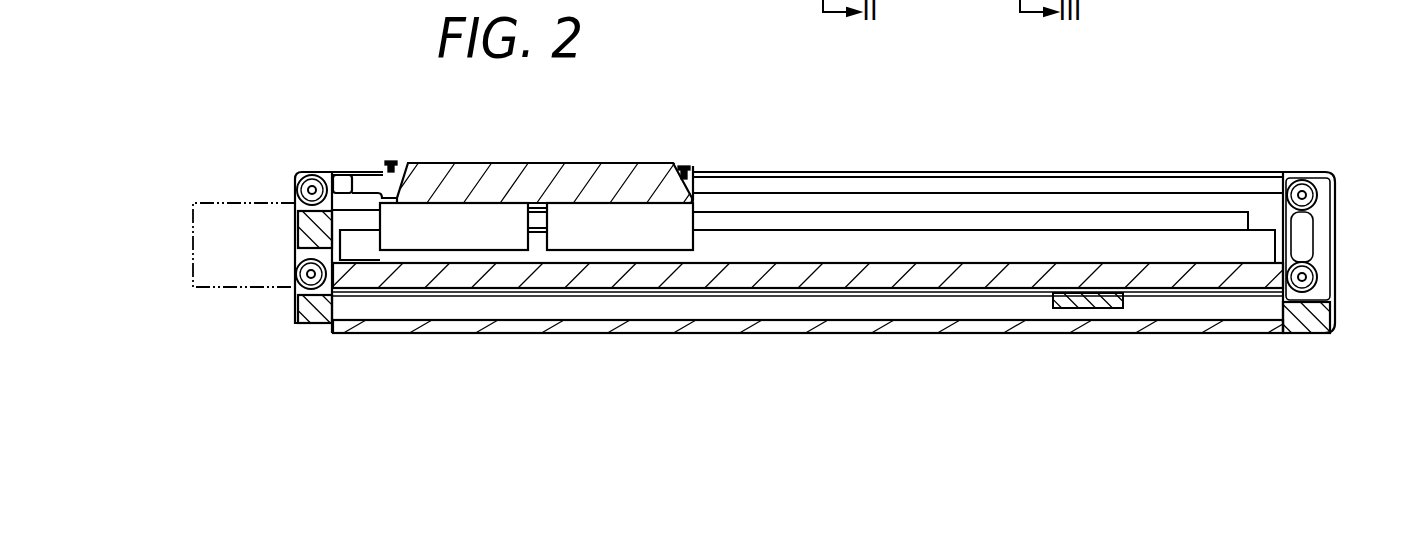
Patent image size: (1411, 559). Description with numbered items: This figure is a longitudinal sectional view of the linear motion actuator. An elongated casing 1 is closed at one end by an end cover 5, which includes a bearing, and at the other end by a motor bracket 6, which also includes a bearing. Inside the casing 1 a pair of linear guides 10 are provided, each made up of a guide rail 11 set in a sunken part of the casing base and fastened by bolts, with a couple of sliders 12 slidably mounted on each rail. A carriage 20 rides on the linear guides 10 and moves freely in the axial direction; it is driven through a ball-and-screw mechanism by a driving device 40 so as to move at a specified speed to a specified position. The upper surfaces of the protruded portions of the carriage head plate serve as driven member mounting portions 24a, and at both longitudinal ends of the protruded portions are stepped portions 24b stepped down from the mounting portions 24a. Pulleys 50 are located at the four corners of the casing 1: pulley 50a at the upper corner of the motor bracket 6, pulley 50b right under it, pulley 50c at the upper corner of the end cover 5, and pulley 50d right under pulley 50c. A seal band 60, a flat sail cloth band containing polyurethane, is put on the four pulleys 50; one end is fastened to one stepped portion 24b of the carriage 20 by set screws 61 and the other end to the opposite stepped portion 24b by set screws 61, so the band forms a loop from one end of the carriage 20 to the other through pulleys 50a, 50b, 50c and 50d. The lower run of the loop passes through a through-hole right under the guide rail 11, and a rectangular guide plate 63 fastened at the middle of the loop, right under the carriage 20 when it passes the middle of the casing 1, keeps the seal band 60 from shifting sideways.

The casing 1 is at (1237, 325).
The end cover 5 is at (1300, 317).
The motor bracket 6 is at (320, 313).
The linear guide 10 is at (536, 305).
The guide rail 11 is at (558, 242).
The slider 12 is at (502, 238).
The carriage 20 is at (544, 141).
The driven member mounting portion 24a is at (498, 163).
The stepped portion 24b is at (388, 160).
The driving device 40 is at (222, 282).
The pulleys 50 is at (1341, 187).
The pulley 50a is at (300, 177).
The pulley 50b is at (298, 297).
The pulley 50c is at (1302, 195).
The pulley 50d is at (1306, 270).
The seal band 60 is at (1060, 172).
The set screws 61 is at (679, 165).
The guide plate 63 is at (1088, 308).